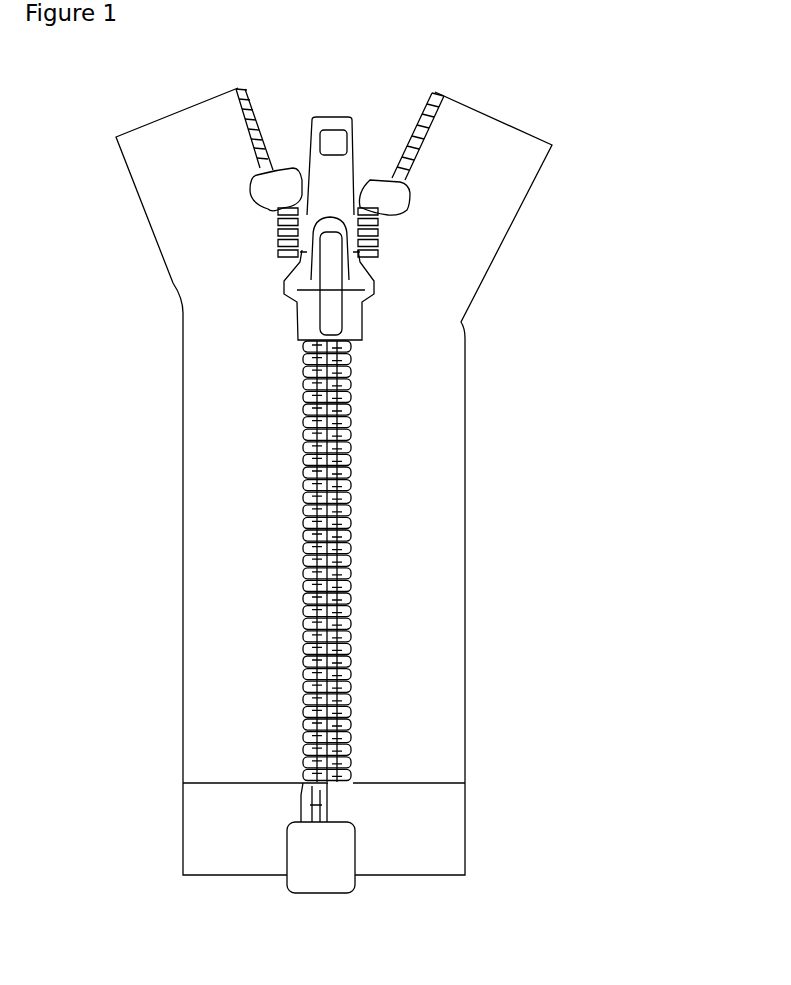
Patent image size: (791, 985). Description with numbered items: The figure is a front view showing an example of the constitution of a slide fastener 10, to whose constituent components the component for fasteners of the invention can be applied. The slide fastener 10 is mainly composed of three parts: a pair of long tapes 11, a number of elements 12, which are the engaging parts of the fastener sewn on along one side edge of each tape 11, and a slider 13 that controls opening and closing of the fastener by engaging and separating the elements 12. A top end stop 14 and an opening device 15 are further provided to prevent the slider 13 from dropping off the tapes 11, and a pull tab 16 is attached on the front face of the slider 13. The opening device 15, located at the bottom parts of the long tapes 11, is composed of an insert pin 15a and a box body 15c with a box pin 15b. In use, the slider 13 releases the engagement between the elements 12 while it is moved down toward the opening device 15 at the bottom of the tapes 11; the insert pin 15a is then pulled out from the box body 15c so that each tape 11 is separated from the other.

The slide fastener 10 is at (150, 363).
The long tapes 11 is at (183, 493).
The elements 12 is at (300, 558).
The slider 13 is at (365, 308).
The top end stop 14 is at (410, 193).
The opening device 15 is at (618, 757).
The insert pin 15a is at (308, 798).
The box pin 15b is at (335, 813).
The box body 15c is at (348, 852).
The pull tab 16 is at (333, 113).